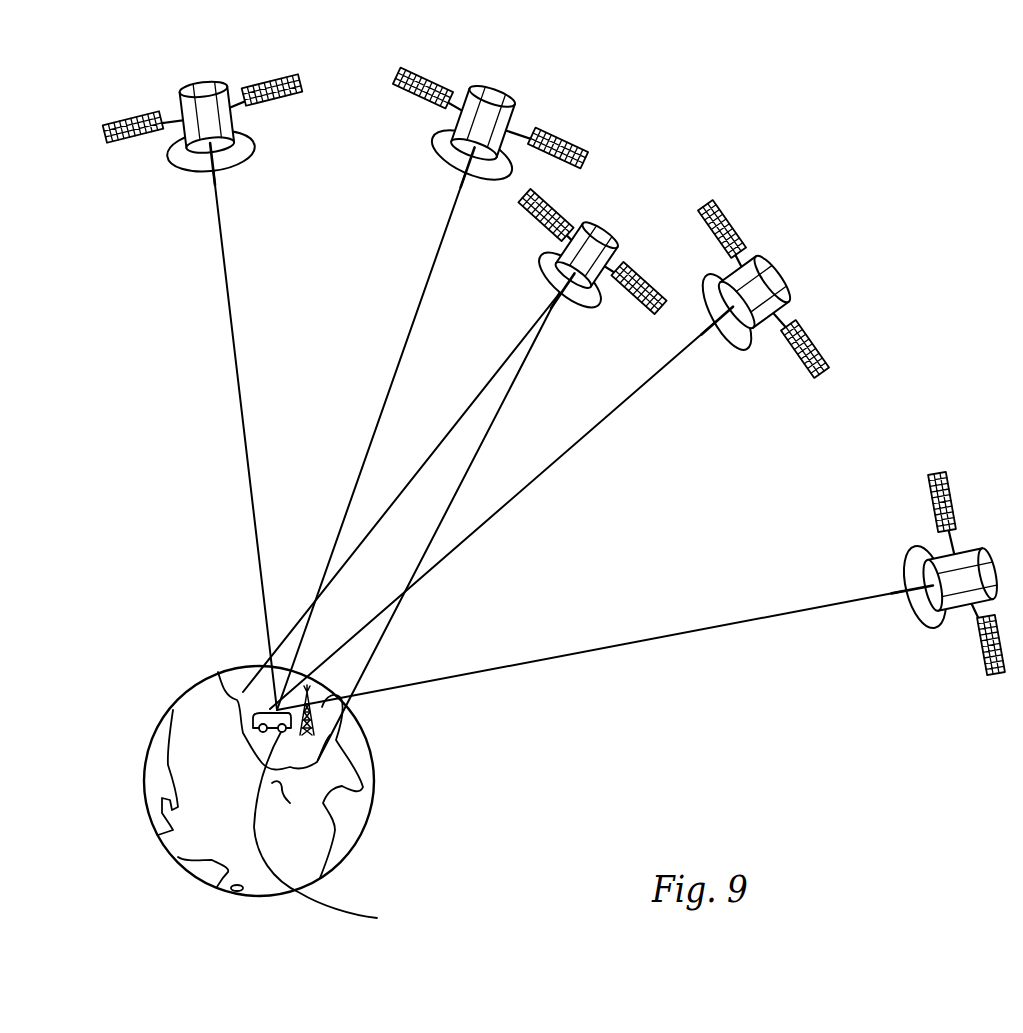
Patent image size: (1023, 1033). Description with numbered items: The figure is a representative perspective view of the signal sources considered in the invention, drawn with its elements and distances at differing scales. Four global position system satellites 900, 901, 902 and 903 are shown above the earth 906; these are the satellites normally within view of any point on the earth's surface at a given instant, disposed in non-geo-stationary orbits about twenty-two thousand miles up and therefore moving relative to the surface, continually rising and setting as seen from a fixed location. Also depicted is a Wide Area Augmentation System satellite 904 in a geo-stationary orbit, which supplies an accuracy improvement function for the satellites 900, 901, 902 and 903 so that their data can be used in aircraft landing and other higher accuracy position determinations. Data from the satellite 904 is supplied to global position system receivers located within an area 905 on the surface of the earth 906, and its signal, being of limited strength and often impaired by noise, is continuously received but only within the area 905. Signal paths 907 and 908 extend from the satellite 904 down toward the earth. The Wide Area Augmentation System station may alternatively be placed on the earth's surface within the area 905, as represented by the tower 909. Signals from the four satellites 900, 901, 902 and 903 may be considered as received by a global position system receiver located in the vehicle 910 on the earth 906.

The global position system satellite 900 is at (198, 88).
The global position system satellite 901 is at (505, 108).
The global position system satellite 902 is at (789, 287).
The global position system satellite 903 is at (951, 508).
The Wide Area Augmentation System satellite 904 is at (604, 240).
The area 905 is at (331, 830).
The earth 906 is at (205, 675).
The satellite signal path 907 is at (502, 363).
The satellite signal path 908 is at (505, 392).
The tower 909 is at (310, 720).
The vehicle 910 is at (255, 713).